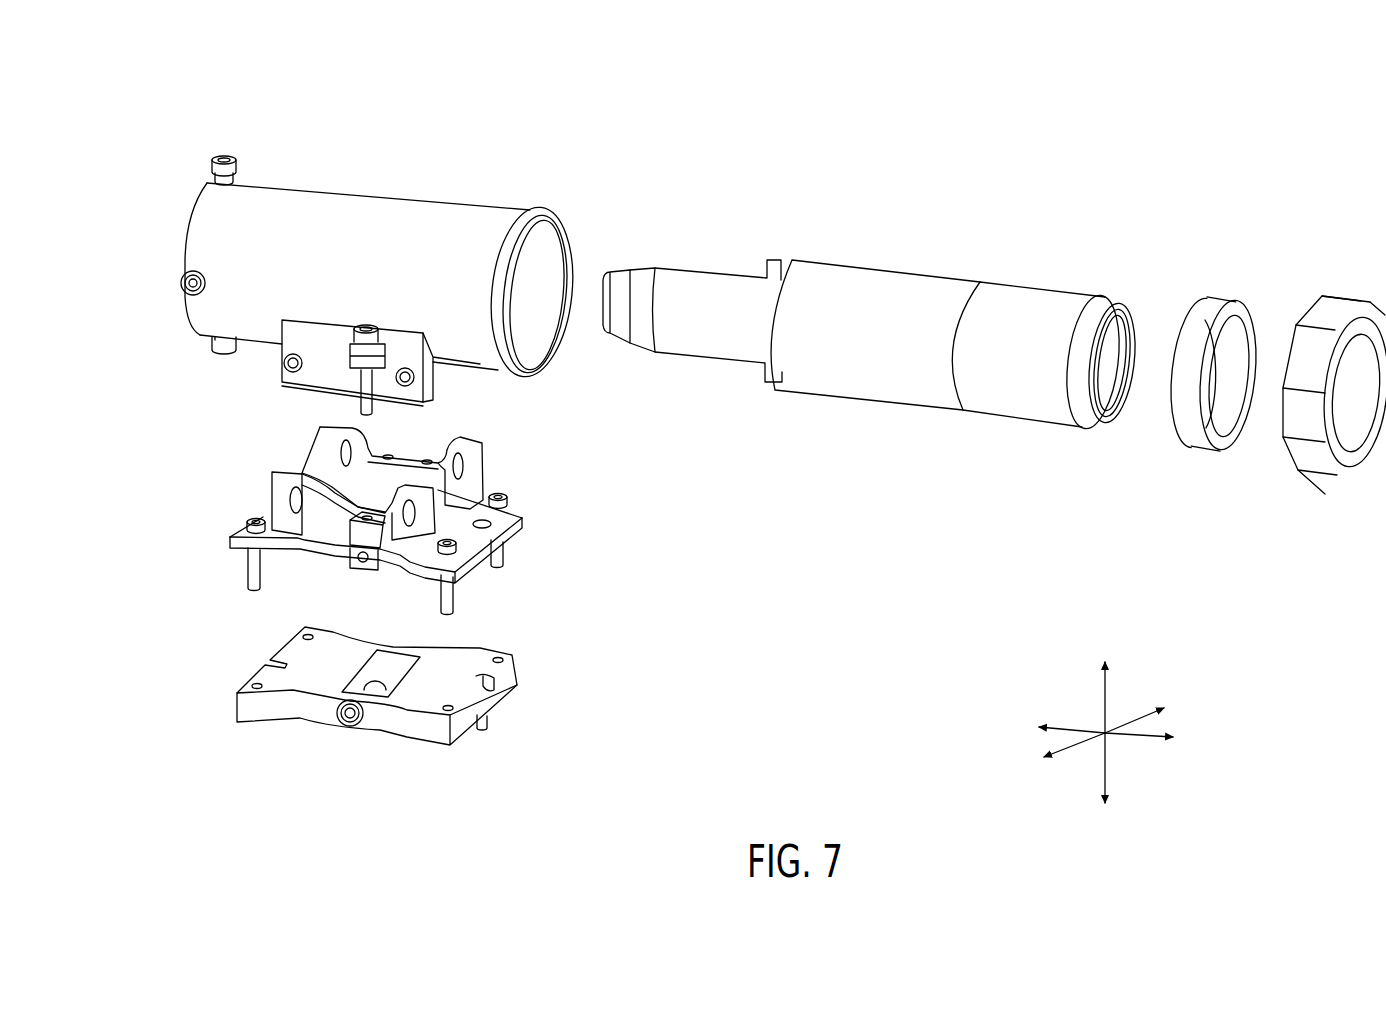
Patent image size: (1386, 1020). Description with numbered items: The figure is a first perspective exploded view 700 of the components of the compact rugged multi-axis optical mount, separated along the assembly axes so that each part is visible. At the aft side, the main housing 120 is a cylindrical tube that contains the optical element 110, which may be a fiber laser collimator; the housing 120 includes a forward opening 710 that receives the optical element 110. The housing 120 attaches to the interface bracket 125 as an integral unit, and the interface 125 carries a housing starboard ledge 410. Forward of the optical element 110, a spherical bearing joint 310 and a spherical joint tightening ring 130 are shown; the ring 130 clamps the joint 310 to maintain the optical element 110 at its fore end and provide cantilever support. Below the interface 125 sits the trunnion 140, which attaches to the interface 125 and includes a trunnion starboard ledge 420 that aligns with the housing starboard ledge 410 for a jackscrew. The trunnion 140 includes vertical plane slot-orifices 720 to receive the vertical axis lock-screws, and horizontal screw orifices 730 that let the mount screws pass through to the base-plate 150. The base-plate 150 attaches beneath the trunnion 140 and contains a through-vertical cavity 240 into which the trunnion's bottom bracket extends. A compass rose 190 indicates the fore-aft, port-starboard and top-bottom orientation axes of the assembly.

The first perspective exploded view 700 is at (1154, 144).
The optical element 110 is at (863, 262).
The main housing 120 is at (437, 200).
The interface bracket 125 is at (296, 397).
The spherical joint tightening ring 130 is at (1290, 467).
The trunnion 140 is at (522, 507).
The base-plate 150 is at (513, 668).
The compass rose 190 is at (1145, 617).
The through-vertical cavity 240 is at (392, 647).
The spherical bearing joint 310 is at (1175, 430).
The housing starboard ledge 410 is at (352, 360).
The trunnion starboard ledge 420 is at (357, 523).
The forward opening 710 is at (559, 258).
The vertical plane slot-orifices 720 is at (460, 463).
The horizontal screw orifices 730 is at (490, 527).